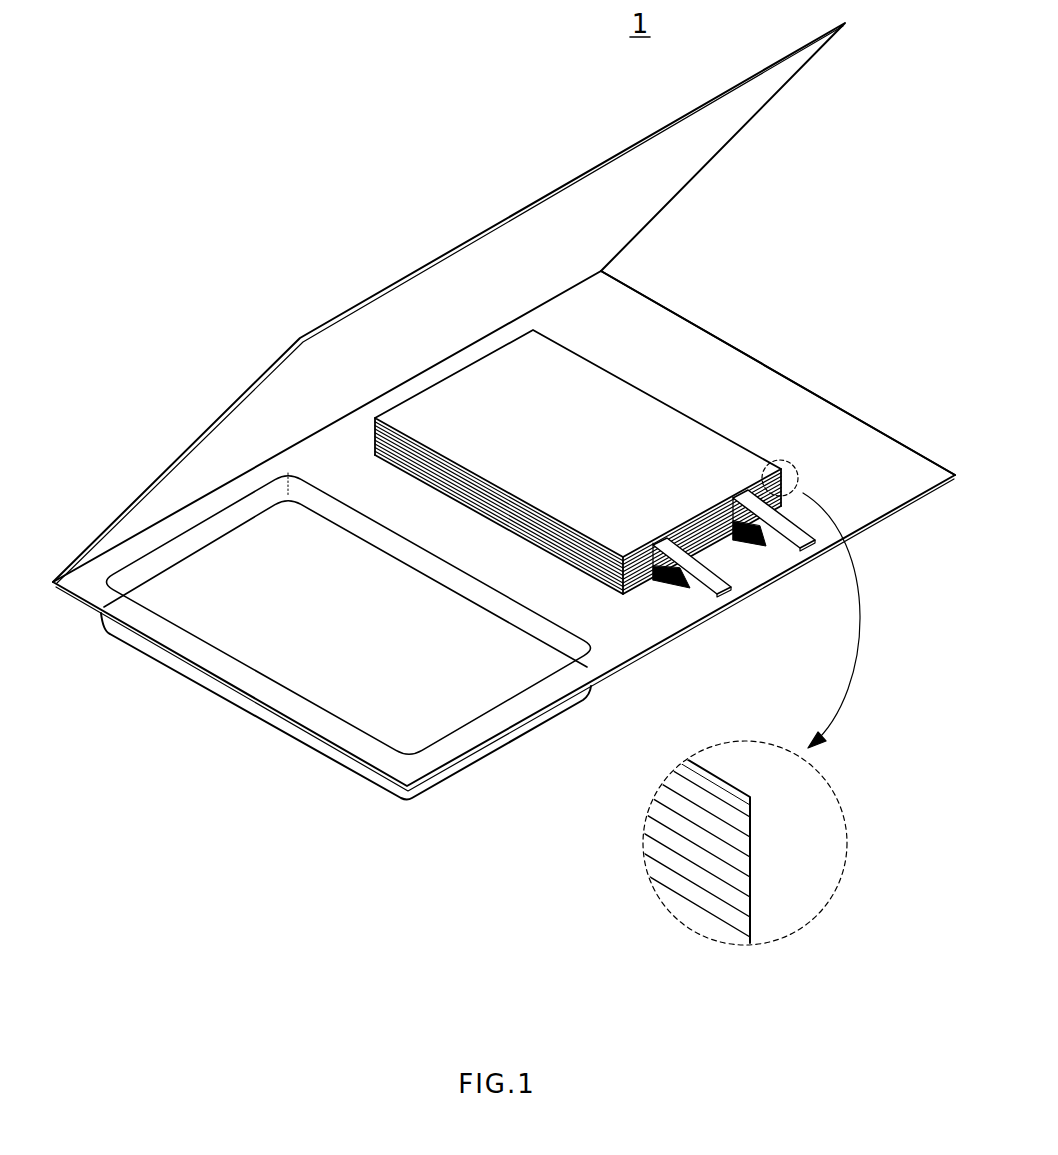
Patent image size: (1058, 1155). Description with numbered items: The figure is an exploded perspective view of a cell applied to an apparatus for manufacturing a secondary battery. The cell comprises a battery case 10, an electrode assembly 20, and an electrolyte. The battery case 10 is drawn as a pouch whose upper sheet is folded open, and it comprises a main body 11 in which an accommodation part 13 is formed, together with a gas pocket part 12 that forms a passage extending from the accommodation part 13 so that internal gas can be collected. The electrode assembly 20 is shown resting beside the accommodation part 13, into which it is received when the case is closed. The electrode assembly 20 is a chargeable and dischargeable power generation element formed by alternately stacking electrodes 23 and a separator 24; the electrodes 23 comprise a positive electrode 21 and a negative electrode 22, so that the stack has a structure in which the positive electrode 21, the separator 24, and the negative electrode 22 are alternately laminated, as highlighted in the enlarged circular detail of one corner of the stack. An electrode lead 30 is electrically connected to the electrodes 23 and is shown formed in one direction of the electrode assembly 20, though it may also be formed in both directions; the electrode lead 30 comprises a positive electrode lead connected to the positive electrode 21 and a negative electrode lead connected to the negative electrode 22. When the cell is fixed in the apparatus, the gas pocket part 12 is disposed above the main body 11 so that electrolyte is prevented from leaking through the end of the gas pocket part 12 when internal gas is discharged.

The battery case 10 is at (307, 744).
The main body 11 is at (237, 704).
The gas pocket part 12 is at (748, 372).
The accommodation part 13 is at (378, 703).
The electrode assembly 20 is at (592, 361).
The positive electrode 21 is at (657, 883).
The negative electrode 22 is at (677, 910).
The electrodes 23 is at (541, 857).
The separator 24 is at (687, 845).
The electrode lead 30 is at (788, 544).